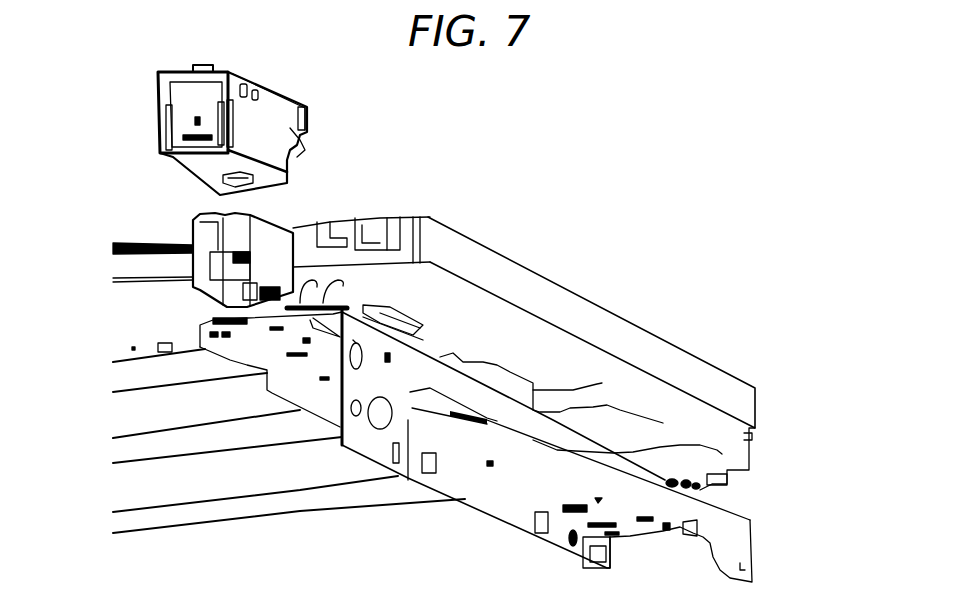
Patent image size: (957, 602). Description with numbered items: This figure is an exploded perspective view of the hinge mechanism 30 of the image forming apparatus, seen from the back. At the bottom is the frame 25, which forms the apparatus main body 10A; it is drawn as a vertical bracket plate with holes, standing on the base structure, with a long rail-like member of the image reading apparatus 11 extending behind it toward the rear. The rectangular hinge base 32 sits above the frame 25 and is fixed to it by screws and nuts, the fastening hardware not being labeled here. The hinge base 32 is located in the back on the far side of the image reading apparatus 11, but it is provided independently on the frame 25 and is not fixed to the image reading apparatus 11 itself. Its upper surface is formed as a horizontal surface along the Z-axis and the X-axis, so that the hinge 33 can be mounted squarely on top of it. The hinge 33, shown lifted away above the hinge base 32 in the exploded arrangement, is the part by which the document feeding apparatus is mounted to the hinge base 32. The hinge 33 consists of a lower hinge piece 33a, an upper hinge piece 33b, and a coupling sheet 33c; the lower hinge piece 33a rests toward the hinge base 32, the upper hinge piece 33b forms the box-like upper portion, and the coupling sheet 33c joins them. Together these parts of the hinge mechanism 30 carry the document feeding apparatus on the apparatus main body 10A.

The apparatus main body 10A is at (755, 510).
The image reading apparatus 11 is at (527, 253).
The frame 25 is at (515, 420).
The hinge mechanism 30 is at (267, 228).
The hinge base 32 is at (268, 232).
The hinge 33 is at (224, 102).
The lower hinge piece 33a is at (289, 173).
The upper hinge piece 33b is at (281, 106).
The coupling sheet 33c is at (243, 86).